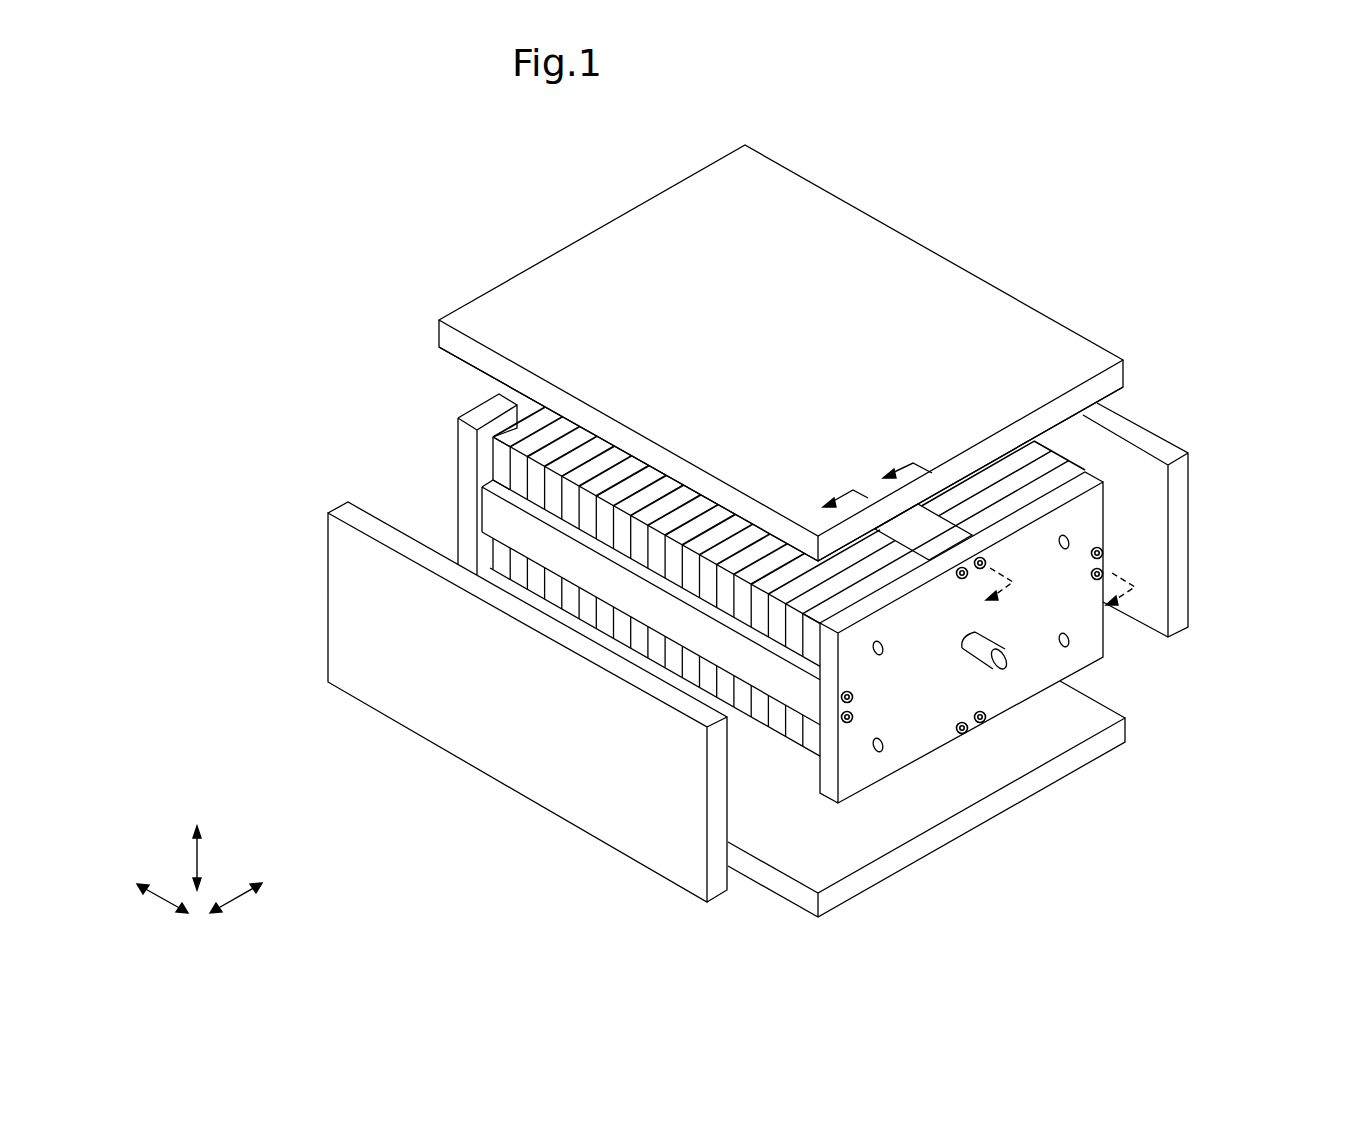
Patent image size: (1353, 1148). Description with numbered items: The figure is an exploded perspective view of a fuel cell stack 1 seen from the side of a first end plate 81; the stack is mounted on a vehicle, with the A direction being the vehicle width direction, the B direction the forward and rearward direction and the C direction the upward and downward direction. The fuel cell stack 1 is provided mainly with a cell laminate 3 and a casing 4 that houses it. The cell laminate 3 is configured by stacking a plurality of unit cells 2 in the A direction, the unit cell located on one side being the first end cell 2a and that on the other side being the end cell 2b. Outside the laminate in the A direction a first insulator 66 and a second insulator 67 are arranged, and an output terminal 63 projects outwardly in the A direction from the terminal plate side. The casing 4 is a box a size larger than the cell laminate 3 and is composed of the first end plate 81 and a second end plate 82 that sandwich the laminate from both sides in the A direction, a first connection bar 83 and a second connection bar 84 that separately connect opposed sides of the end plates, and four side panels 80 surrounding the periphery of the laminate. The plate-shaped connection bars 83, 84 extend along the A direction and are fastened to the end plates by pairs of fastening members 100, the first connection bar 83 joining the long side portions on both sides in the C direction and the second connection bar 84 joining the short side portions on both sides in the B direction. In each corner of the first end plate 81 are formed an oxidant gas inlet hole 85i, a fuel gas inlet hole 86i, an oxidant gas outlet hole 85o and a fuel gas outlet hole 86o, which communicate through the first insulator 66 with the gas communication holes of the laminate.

The fuel cell stack 1 is at (1097, 283).
The unit cell 2 is at (692, 577).
The first end cell 2a is at (793, 735).
The end battery cell 2b is at (517, 568).
The cell laminate 3 is at (698, 639).
The casing 4 is at (897, 222).
The output terminal 63 is at (1005, 667).
The first insulator 66 is at (805, 628).
The second insulator 67 is at (497, 462).
The side panel 80 is at (984, 288).
The first end plate 81 is at (1033, 668).
The second end plate 82 is at (502, 422).
The first connection bar 83 is at (915, 542).
The second connection bar 84 is at (497, 515).
The oxidant gas inlet hole 85i is at (1070, 541).
The oxidant gas outlet hole 85o is at (883, 750).
The fuel gas inlet hole 86i is at (1070, 641).
The fuel gas outlet hole 86o is at (881, 652).
The fastening member 100 is at (962, 567).